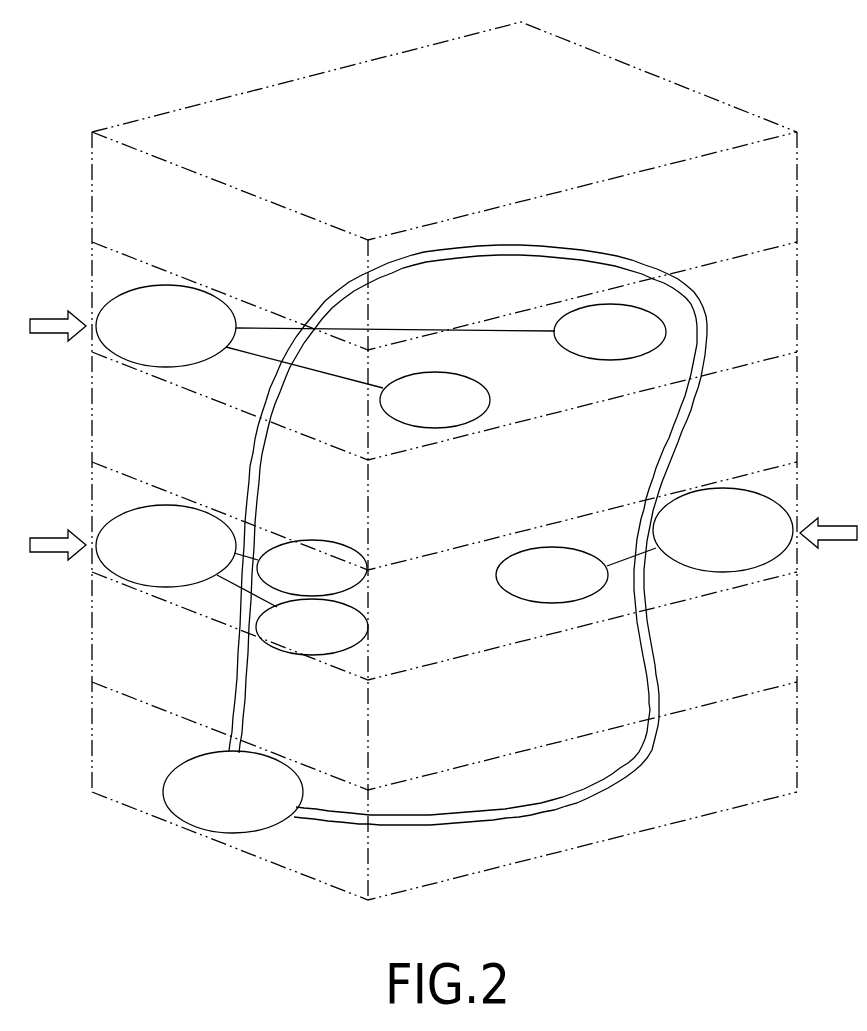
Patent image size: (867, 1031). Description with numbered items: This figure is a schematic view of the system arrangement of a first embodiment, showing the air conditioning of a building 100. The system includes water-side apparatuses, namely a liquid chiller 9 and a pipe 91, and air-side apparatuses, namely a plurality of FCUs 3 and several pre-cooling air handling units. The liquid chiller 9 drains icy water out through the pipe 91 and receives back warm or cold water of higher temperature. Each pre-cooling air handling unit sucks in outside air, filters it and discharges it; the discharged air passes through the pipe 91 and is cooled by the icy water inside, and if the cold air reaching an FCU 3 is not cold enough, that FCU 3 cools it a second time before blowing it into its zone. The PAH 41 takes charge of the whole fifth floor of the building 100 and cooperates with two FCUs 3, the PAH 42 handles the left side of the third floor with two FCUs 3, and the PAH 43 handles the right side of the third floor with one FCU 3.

The building 100 is at (630, 85).
The PAH 41 is at (130, 296).
The PAH 42 is at (130, 516).
The PAH 43 is at (722, 498).
The FCU 3 is at (433, 428).
The liquid chiller 9 is at (165, 803).
The pipe 91 is at (611, 779).